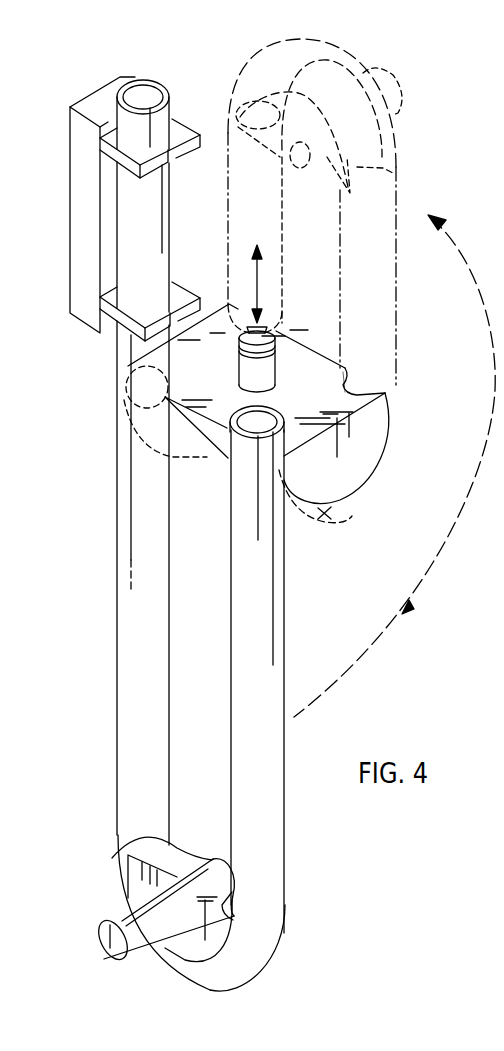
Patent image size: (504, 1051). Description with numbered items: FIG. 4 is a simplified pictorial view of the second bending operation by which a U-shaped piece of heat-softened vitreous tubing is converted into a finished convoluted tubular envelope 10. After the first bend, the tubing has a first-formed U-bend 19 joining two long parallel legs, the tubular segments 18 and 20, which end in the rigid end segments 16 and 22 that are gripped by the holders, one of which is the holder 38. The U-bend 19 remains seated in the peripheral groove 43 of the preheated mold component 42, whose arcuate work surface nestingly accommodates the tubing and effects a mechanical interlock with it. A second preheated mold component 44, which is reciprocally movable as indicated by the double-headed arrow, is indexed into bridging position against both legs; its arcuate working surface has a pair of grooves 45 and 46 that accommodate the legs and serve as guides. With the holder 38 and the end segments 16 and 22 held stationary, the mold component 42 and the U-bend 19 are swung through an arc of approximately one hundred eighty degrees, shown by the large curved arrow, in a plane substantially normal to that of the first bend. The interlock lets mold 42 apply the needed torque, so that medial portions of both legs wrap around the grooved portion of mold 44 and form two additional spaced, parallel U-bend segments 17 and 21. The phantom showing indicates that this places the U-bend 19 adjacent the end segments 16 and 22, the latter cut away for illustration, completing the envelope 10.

The tubular envelope 10 is at (226, 139).
The end segment 16 is at (140, 249).
The U-bend segment 17 is at (183, 452).
The tubular segment 18 is at (252, 192).
The U-bend 19 is at (292, 54).
The tubular segment 20 is at (382, 312).
The U-bend segment 21 is at (336, 520).
The end segment 22 is at (272, 411).
The holder 38 is at (82, 191).
The mold component 42 is at (328, 168).
The peripheral groove 43 is at (387, 173).
The mold component 44 is at (324, 460).
The groove 45 is at (364, 395).
The groove 46 is at (262, 330).